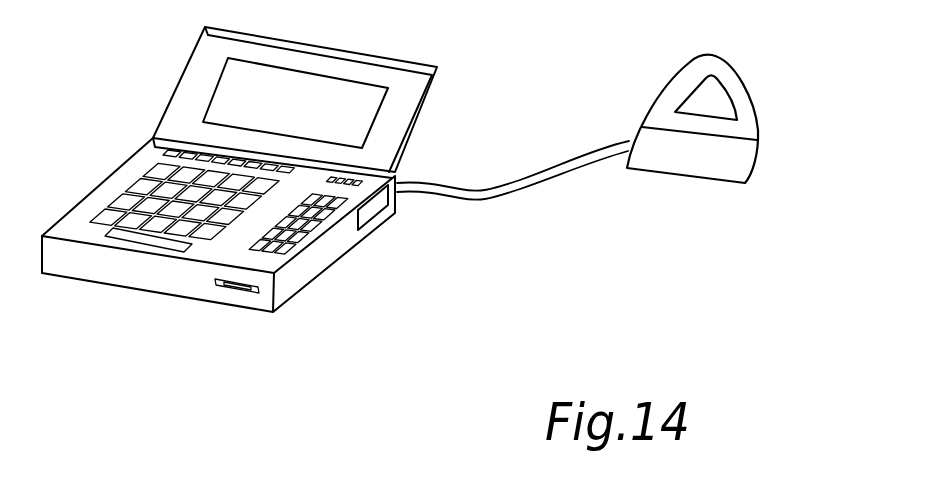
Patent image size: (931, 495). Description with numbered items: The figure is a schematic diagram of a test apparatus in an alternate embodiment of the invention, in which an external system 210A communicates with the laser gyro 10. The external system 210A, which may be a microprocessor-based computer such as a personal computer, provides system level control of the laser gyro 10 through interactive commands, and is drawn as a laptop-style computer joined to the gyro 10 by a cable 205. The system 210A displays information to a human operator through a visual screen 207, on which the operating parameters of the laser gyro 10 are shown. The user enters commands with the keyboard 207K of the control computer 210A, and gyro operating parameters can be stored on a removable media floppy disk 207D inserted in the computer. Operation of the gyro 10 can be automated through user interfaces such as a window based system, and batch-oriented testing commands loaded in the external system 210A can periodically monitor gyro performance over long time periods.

The laser gyro 10 is at (745, 94).
The cable 205 is at (488, 192).
The visual screen 207 is at (358, 113).
The keyboard 207K is at (123, 202).
The removable media floppy disk 207D is at (222, 291).
The external system 210A is at (350, 250).